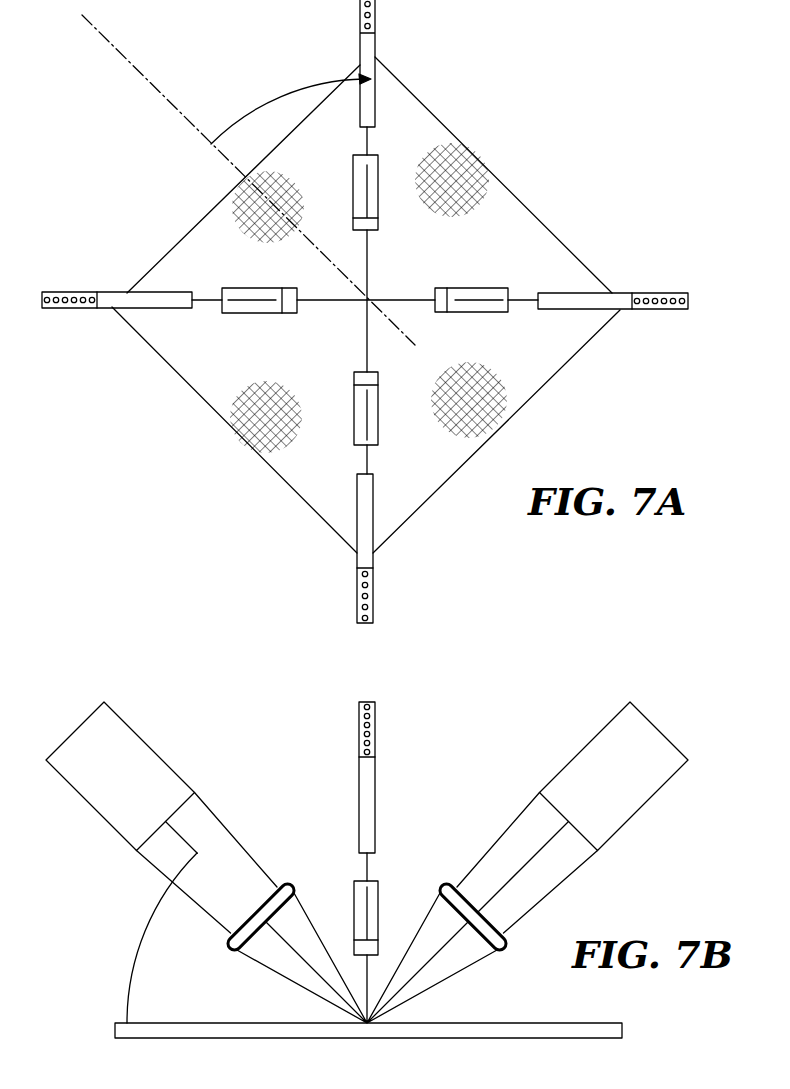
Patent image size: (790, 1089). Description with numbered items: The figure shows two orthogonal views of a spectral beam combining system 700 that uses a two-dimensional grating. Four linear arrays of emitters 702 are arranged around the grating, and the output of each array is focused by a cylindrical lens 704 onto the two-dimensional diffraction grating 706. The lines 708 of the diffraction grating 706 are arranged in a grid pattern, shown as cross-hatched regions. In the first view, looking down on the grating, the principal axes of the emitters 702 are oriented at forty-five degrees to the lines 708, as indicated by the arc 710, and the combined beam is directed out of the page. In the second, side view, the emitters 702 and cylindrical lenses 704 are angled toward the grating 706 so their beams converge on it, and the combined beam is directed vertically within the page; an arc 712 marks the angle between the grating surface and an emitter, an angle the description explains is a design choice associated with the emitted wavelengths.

In FIG. 7A, the system 700 is at (496, 601).
In FIG. 7B, the system 700 is at (388, 1066).
In FIG. 7A, the linear arrays of emitters 702 is at (360, 47).
In FIG. 7B, the linear arrays of emitters 702 is at (148, 746).
In FIG. 7A, the cylindrical lenses 704 is at (354, 200).
In FIG. 7B, the cylindrical lenses 704 is at (230, 950).
In FIG. 7A, the two-dimensional diffraction grating 706 is at (203, 221).
In FIG. 7B, the two-dimensional diffraction grating 706 is at (545, 1023).
In FIG. 7A, the lines 708 is at (450, 163).
In FIG. 7A, the arc 710 is at (275, 103).
In FIG. 7B, the illumination angle 712 is at (137, 953).